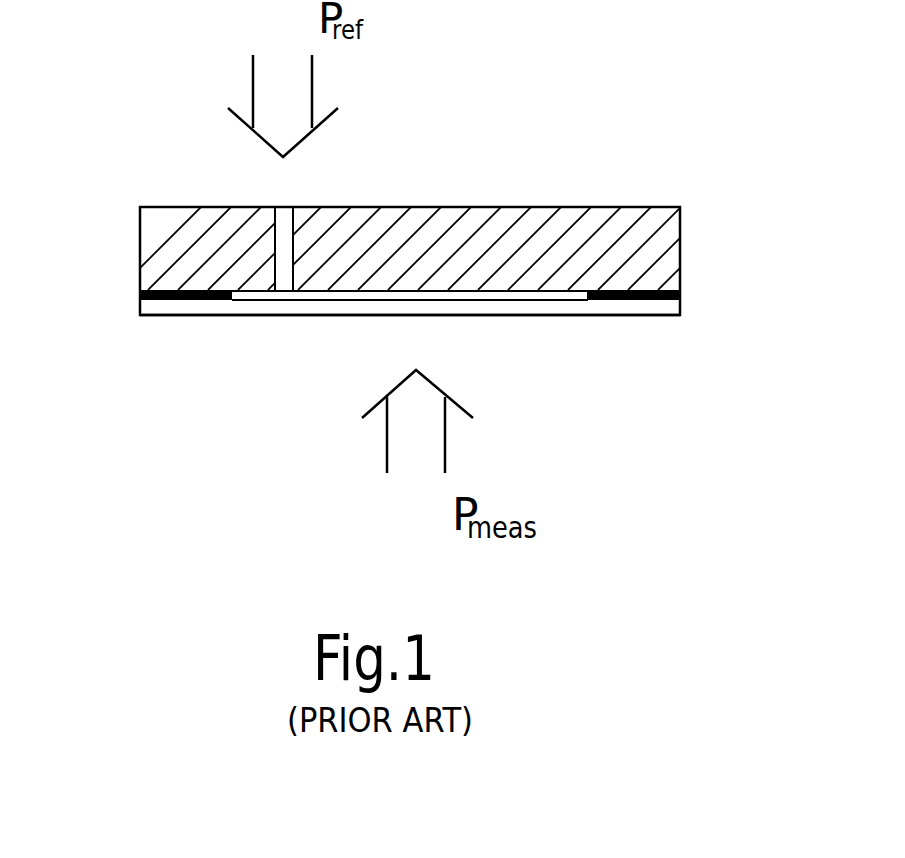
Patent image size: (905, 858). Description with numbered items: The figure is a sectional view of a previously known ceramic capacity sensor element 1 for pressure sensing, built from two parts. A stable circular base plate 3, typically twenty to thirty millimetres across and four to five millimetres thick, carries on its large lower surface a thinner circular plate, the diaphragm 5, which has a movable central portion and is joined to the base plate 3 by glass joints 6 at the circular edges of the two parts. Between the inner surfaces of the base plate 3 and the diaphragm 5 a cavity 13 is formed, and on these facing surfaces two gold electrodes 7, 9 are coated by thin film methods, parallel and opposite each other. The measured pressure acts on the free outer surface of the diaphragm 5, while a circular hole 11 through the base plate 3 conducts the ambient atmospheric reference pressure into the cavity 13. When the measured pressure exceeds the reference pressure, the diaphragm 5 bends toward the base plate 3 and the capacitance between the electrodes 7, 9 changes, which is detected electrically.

The ceramic capacity sensor element 1 is at (699, 204).
The base plate 3 is at (657, 238).
The diaphragm 5 is at (167, 307).
The glass joints 6 is at (682, 292).
The electrode 7 is at (452, 288).
The electrode 9 is at (427, 300).
The circular hole 11 is at (296, 227).
The cavity 13 is at (252, 300).